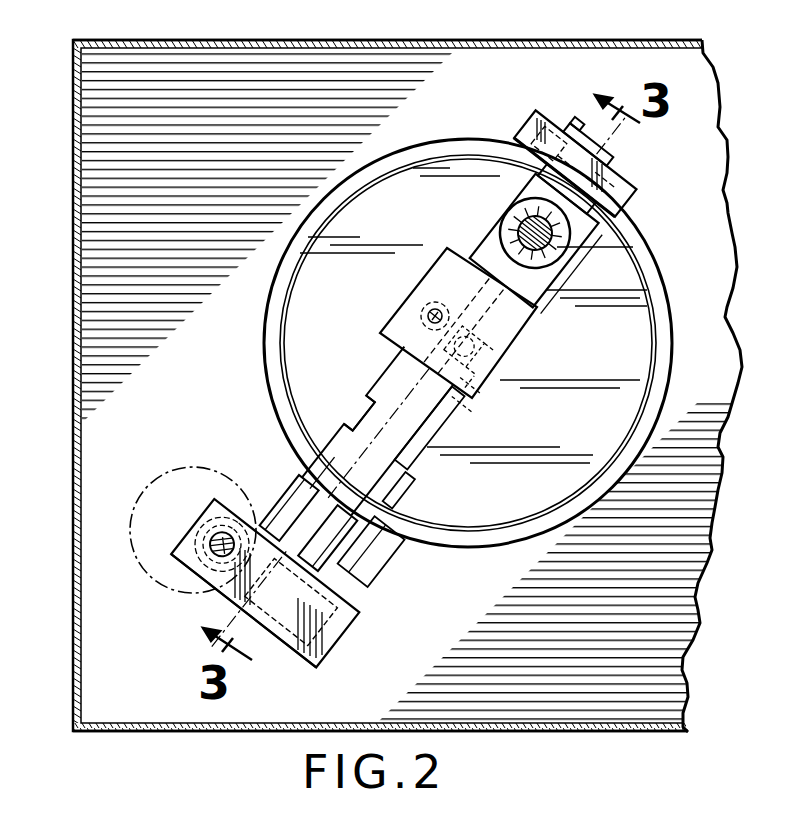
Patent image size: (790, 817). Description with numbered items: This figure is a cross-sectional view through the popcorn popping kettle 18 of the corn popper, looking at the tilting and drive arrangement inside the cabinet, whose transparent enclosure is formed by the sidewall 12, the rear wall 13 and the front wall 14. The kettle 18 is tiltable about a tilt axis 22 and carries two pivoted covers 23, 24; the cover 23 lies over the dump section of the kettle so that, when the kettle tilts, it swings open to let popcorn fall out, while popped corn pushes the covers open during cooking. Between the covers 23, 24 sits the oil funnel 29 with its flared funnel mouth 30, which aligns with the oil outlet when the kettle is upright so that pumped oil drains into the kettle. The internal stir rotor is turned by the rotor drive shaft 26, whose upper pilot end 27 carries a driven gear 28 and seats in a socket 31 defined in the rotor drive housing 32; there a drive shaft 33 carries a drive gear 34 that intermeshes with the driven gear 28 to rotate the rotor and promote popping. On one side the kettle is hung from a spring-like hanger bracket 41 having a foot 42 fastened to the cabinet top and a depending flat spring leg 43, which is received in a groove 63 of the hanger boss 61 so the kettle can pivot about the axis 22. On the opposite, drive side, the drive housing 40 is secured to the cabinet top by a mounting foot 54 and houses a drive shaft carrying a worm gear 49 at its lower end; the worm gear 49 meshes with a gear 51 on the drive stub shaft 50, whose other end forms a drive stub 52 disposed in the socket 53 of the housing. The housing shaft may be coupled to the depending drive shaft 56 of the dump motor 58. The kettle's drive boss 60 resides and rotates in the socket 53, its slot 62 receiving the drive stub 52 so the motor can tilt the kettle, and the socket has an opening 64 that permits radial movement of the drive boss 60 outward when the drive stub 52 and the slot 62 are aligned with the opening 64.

The sidewall 12 is at (72, 388).
The rear wall 13 is at (366, 40).
The front wall 14 is at (582, 731).
The popping kettle 18 is at (385, 148).
The tilt axis 22 is at (400, 376).
The cover 23 is at (607, 431).
The cover 24 is at (346, 288).
The rotor drive shaft 26 is at (490, 350).
The upper pilot end 27 is at (540, 359).
The driven gear 28 is at (508, 384).
The oil funnel 29 is at (562, 267).
The flared funnel mouth 30 is at (512, 218).
The socket 31 is at (470, 385).
The rotor drive housing 32 is at (444, 266).
The drive shaft 33 is at (434, 308).
The drive gear 34 is at (427, 316).
The drive housing 40 is at (350, 639).
The hanger bracket 41 is at (546, 73).
The foot 42 is at (640, 194).
The flat spring leg 43 is at (637, 178).
The worm gear 49 is at (196, 585).
The drive stub shaft 50 is at (280, 645).
The gear 51 is at (340, 598).
The drive stub 52 is at (290, 515).
The socket 53 is at (346, 559).
The mounting foot 54 is at (173, 560).
The depending drive shaft 56 is at (212, 536).
The dump motor 58 is at (157, 469).
The drive boss 60 is at (396, 560).
The hanger boss 61 is at (627, 148).
The slot 62 is at (342, 487).
The groove 63 is at (580, 124).
The opening 64 is at (405, 520).